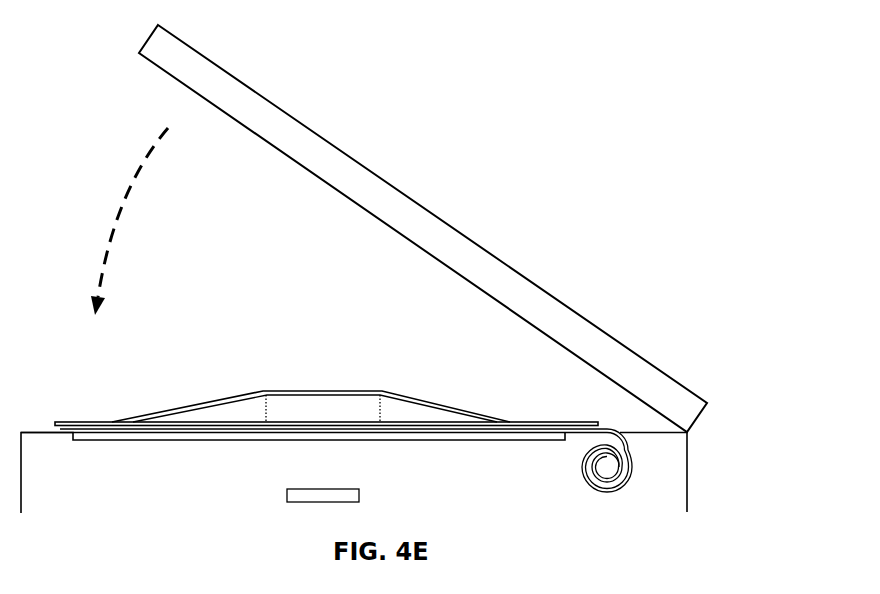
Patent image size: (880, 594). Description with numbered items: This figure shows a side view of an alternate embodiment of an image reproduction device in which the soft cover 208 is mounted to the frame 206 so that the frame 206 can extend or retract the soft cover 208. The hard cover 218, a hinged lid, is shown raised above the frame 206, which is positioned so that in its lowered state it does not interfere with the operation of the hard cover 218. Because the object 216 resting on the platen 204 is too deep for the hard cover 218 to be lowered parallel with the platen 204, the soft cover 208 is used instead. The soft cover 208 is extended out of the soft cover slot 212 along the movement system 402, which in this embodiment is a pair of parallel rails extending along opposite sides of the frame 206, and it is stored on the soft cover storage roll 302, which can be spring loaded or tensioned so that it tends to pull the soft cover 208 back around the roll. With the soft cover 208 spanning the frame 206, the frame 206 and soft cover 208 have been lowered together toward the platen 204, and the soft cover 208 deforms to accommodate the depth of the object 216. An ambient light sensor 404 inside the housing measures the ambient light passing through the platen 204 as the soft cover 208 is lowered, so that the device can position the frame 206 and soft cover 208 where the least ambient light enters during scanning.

The hard cover 218 is at (340, 175).
The soft cover slot 212 is at (622, 440).
The soft cover 208 is at (300, 391).
The object 216 is at (323, 408).
The frame 206 is at (88, 423).
The movement system 402 is at (115, 430).
The platen 204 is at (155, 438).
The ambient light sensor 404 is at (293, 492).
The soft cover storage roll 302 is at (607, 467).